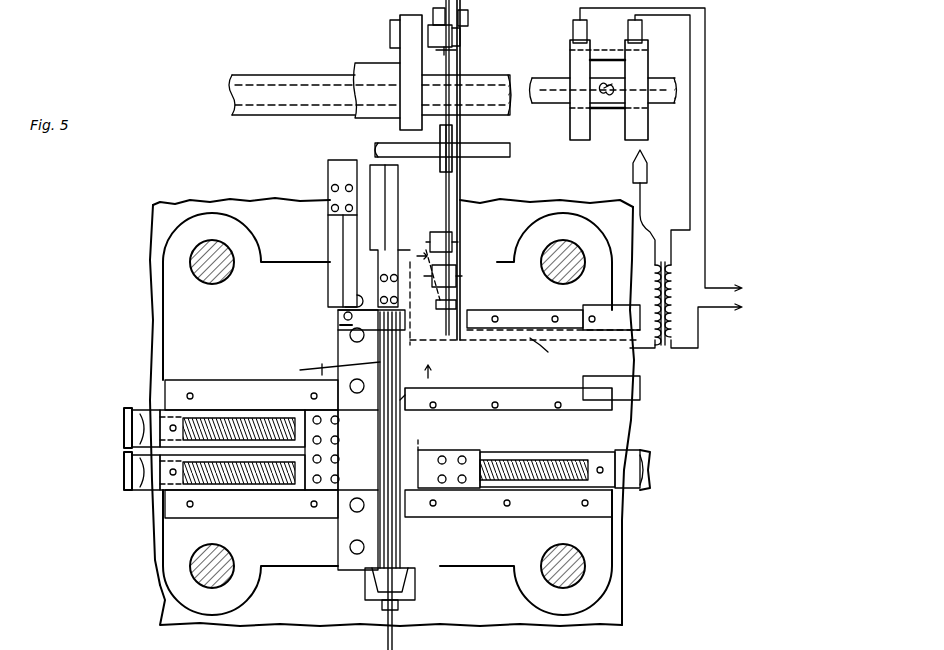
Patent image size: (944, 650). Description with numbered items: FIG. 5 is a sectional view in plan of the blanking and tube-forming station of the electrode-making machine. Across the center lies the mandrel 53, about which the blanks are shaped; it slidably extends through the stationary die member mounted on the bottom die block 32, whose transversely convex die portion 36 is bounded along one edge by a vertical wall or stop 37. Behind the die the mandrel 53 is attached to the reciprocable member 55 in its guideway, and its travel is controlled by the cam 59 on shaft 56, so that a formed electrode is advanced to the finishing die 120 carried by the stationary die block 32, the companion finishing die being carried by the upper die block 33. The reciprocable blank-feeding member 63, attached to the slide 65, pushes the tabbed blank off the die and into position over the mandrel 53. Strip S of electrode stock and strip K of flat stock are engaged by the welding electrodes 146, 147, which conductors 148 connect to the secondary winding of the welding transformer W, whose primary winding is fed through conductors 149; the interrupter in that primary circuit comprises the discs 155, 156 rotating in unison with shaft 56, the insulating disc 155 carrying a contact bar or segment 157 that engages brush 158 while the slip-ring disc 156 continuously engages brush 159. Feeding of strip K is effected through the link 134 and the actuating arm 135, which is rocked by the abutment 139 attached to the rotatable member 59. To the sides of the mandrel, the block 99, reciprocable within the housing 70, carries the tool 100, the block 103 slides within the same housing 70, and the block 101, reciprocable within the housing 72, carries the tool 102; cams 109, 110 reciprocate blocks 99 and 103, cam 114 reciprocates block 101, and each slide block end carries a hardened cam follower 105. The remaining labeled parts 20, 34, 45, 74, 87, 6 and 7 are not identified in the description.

The base plate 20 is at (148, 237).
The bottom die block 32 is at (275, 265).
The mounting hole 34 is at (222, 268).
The housing 70 is at (215, 382).
The housing 72 is at (455, 390).
The tool 100 is at (372, 505).
The mandrel 53 is at (400, 360).
The finishing die 120 is at (400, 545).
The block 103 is at (238, 410).
The block 99 is at (230, 485).
The screw plate 87 is at (405, 432).
The block 101 is at (548, 465).
The hardened cam follower 105 is at (145, 420).
The cam 110 is at (124, 420).
The cam 109 is at (124, 468).
The cam 114 is at (650, 468).
The contact bar 45 is at (620, 385).
The conductors 148 is at (547, 353).
The strip of electrode material S is at (510, 355).
The vertical wall or stop 37 is at (378, 340).
The transversely convex die portion 36 is at (332, 365).
The pin 74 is at (322, 362).
The tool 102 is at (405, 390).
The arrow 7 is at (434, 365).
The slide 65 is at (335, 174).
The blank-feeding member 63 is at (345, 300).
The reciprocable member 55 is at (398, 185).
The strip of flat stock K is at (452, 185).
The welding electrode 146 is at (431, 268).
The arrow 6 is at (404, 253).
The shaft 56 is at (258, 115).
The cam 59 is at (400, 25).
The actuating arm 135 is at (463, 30).
The abutment 139 is at (452, 53).
The link 134 is at (452, 130).
The disc 155 is at (648, 55).
The disc 156 is at (578, 60).
The contact bar or segment 157 is at (602, 60).
The brush 159 is at (573, 32).
The brush 158 is at (642, 32).
The conductors 149 is at (705, 225).
The welding transformer W is at (666, 258).
The welding electrode 147 is at (647, 172).
The upper die block 33 is at (294, 643).